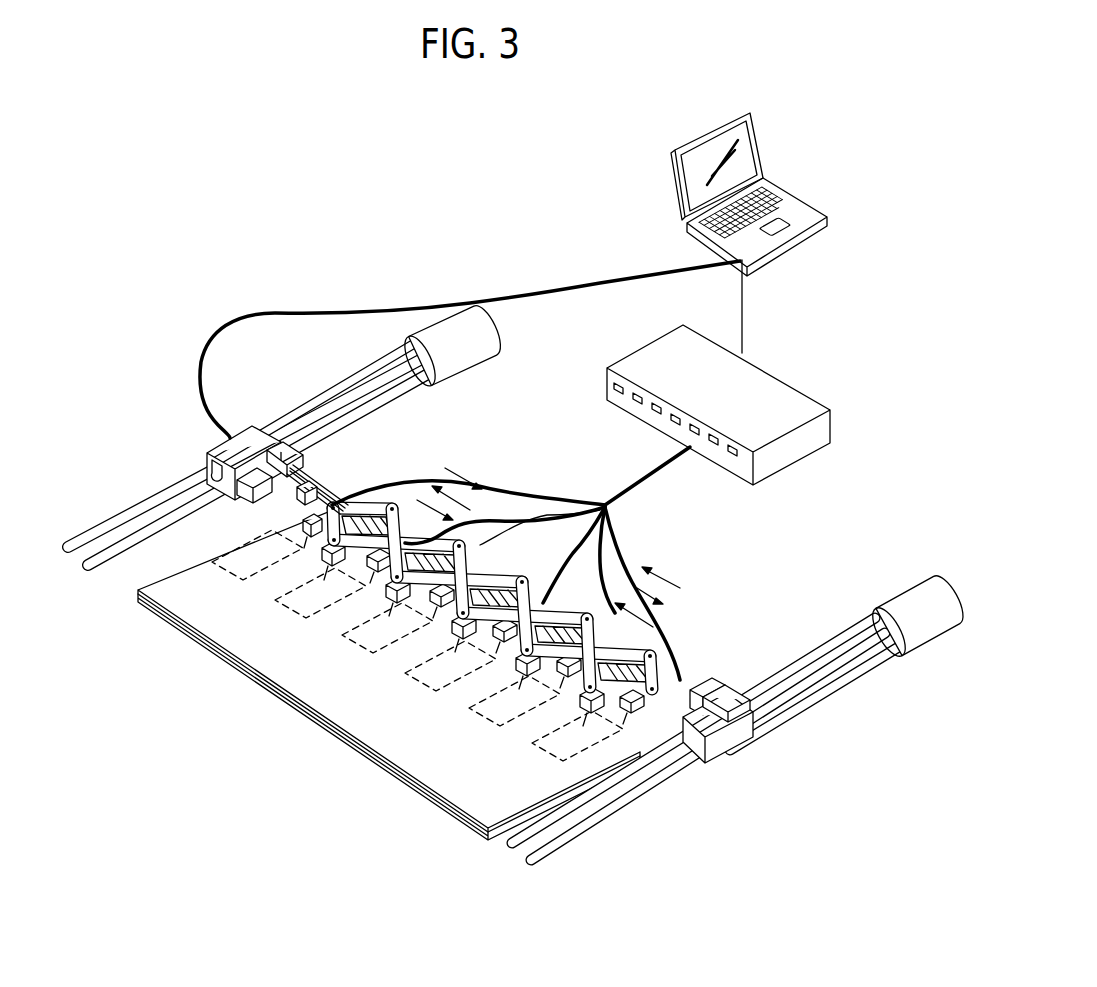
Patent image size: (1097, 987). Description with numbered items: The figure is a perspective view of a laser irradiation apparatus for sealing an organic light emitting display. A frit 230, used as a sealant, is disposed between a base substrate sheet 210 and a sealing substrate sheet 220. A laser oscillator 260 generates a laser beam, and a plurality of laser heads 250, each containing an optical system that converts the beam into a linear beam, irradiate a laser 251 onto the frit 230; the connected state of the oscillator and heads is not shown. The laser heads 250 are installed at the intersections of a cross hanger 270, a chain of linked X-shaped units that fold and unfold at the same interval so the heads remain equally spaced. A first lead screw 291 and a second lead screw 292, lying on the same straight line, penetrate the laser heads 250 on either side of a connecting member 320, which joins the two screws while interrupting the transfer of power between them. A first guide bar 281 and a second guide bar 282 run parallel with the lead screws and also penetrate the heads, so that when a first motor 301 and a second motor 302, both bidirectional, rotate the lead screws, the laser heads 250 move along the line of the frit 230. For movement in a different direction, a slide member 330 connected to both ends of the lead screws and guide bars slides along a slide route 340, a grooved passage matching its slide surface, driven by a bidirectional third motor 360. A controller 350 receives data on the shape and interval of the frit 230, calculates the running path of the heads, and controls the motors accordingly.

The base substrate sheet 210 is at (465, 828).
The sealing substrate sheet 220 is at (458, 798).
The frit 230 is at (527, 702).
The laser heads 250 is at (688, 672).
The laser 251 is at (625, 712).
The laser oscillator 260 is at (790, 395).
The cross hanger 270 is at (605, 505).
The first guide bar 281 is at (215, 497).
The second guide bar 282 is at (327, 490).
The first lead screw 291 is at (400, 478).
The second lead screw 292 is at (710, 690).
The first motor 301 is at (250, 470).
The second motor 302 is at (753, 673).
The connecting member 320 is at (475, 625).
The slide member 330 is at (225, 455).
The slide route 340 is at (773, 697).
The controller 350 is at (805, 215).
The third motor 360 is at (480, 342).